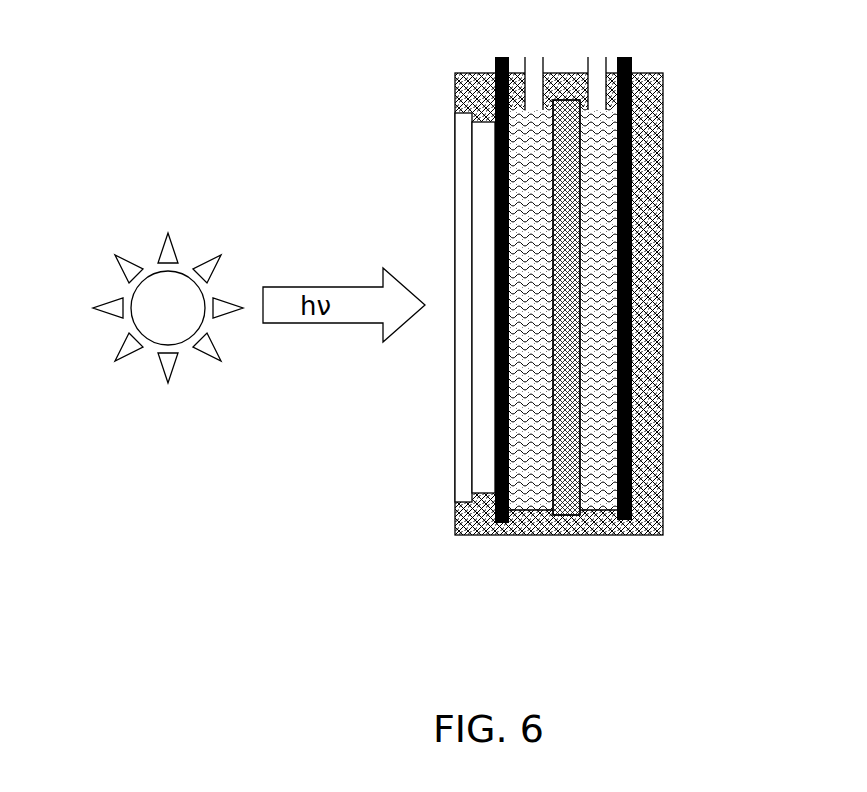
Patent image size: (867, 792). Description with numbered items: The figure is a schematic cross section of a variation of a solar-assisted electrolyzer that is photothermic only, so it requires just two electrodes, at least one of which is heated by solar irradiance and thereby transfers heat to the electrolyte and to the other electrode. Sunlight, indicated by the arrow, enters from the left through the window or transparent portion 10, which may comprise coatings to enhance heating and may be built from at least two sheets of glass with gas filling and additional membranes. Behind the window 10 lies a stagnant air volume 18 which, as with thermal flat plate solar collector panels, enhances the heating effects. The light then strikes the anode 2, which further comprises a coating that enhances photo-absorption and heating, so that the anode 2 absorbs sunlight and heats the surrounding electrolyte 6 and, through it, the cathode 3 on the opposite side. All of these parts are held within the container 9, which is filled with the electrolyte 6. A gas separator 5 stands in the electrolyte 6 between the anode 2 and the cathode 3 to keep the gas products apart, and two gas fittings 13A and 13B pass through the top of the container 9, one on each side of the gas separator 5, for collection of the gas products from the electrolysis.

The anode 2 is at (497, 250).
The cathode 3 is at (628, 458).
The gas separator 5 is at (567, 460).
The electrolyte 6 is at (592, 475).
The container 9 is at (643, 303).
The window 10 is at (460, 365).
The stagnant air volume 18 is at (482, 413).
The gas fitting 13A is at (538, 48).
The gas fitting 13B is at (605, 47).